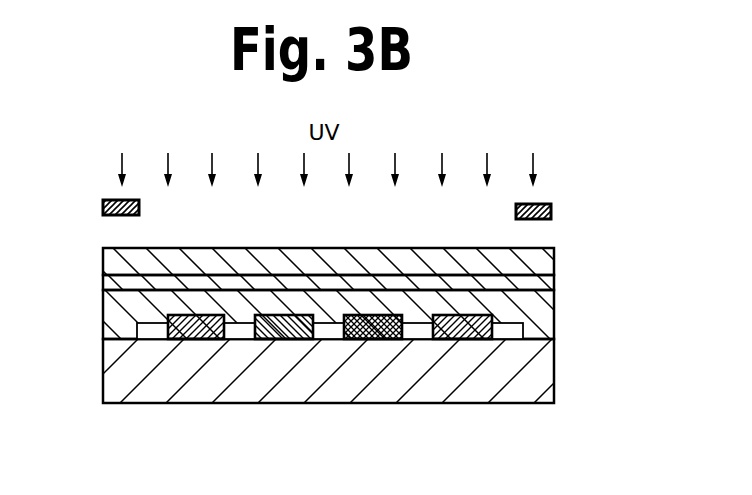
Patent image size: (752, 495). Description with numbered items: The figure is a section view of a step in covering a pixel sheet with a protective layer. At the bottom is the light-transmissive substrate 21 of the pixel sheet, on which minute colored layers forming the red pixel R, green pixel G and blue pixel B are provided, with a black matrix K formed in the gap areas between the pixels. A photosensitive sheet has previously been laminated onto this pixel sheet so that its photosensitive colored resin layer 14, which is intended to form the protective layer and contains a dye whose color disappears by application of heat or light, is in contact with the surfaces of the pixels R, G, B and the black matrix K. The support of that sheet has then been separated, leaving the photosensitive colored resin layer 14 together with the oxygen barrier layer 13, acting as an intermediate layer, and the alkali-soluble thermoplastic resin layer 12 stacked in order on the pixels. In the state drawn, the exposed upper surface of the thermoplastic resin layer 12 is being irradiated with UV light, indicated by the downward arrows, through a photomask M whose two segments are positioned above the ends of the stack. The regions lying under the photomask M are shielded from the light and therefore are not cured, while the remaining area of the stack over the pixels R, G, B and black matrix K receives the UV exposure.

The alkali-soluble thermoplastic resin layer 12 is at (556, 257).
The oxygen barrier layer 13 is at (547, 283).
The photosensitive colored resin layer 14 is at (556, 315).
The light-transmissive substrate 21 is at (556, 372).
The photomask M is at (103, 207).
The black matrix K is at (330, 390).
The red pixel R is at (330, 386).
The green pixel G is at (285, 341).
The blue pixel B is at (373, 341).